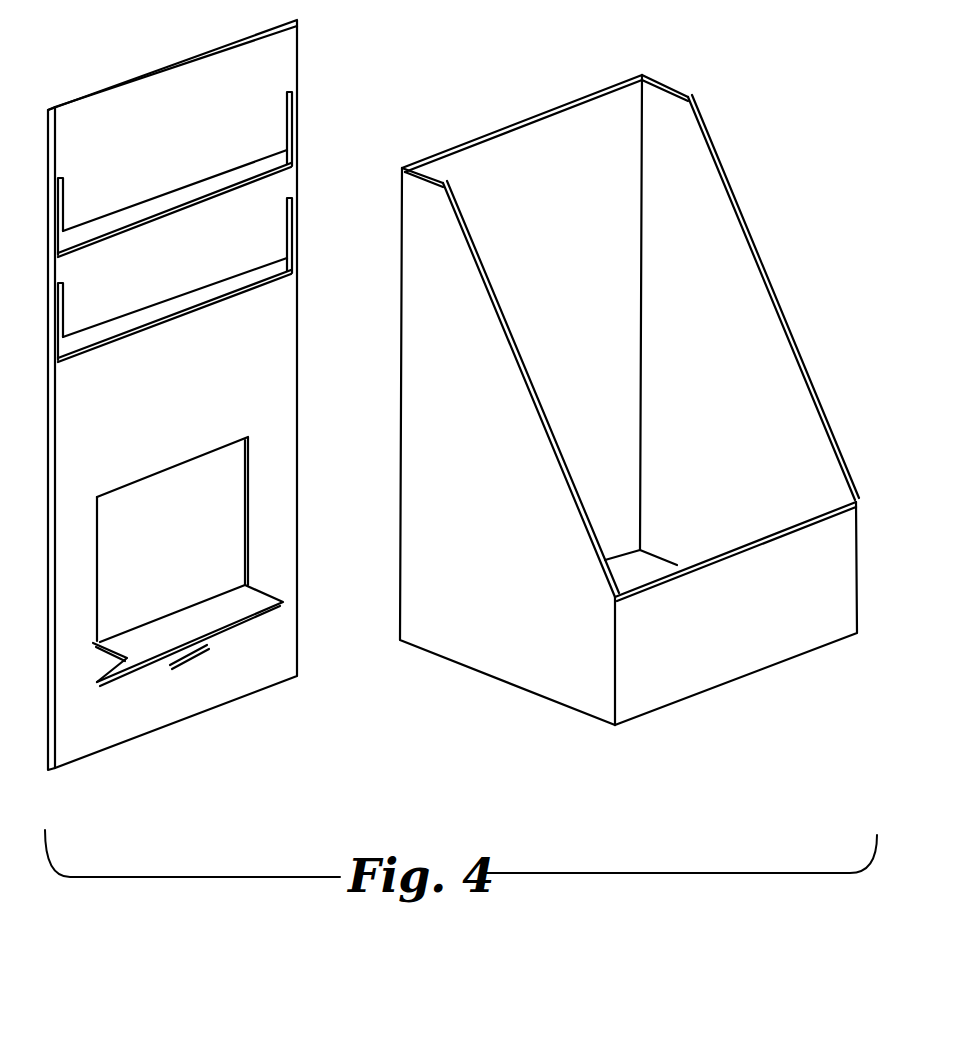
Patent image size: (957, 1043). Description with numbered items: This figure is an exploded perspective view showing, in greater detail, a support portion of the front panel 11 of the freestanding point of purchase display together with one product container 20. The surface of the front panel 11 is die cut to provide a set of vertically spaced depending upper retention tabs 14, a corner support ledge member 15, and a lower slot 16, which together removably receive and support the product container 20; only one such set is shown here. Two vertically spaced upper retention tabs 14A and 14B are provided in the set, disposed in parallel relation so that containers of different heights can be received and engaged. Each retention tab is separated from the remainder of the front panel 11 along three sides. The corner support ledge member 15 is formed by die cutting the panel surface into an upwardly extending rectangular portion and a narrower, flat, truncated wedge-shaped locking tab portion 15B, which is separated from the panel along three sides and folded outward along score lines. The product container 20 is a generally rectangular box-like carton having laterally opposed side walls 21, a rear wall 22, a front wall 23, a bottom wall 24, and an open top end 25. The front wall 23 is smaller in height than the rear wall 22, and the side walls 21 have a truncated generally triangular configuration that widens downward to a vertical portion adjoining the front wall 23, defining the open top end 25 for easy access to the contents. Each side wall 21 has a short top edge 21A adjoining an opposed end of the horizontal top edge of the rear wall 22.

The front panel 11 is at (173, 703).
The upper retention tabs 14 is at (214, 227).
The upper retention tab 14A is at (200, 288).
The upper retention tab 14B is at (197, 180).
The corner support ledge members 15 is at (247, 622).
The wedge-shaped locking tab portion 15B is at (200, 650).
The lower slots 16 is at (268, 683).
The product container 20 is at (629, 386).
The side walls 21 is at (792, 342).
The short top edge 21A is at (443, 177).
The rear wall 22 is at (590, 346).
The front wall 23 is at (753, 620).
The bottom wall 24 is at (642, 568).
The open top end 25 is at (578, 137).